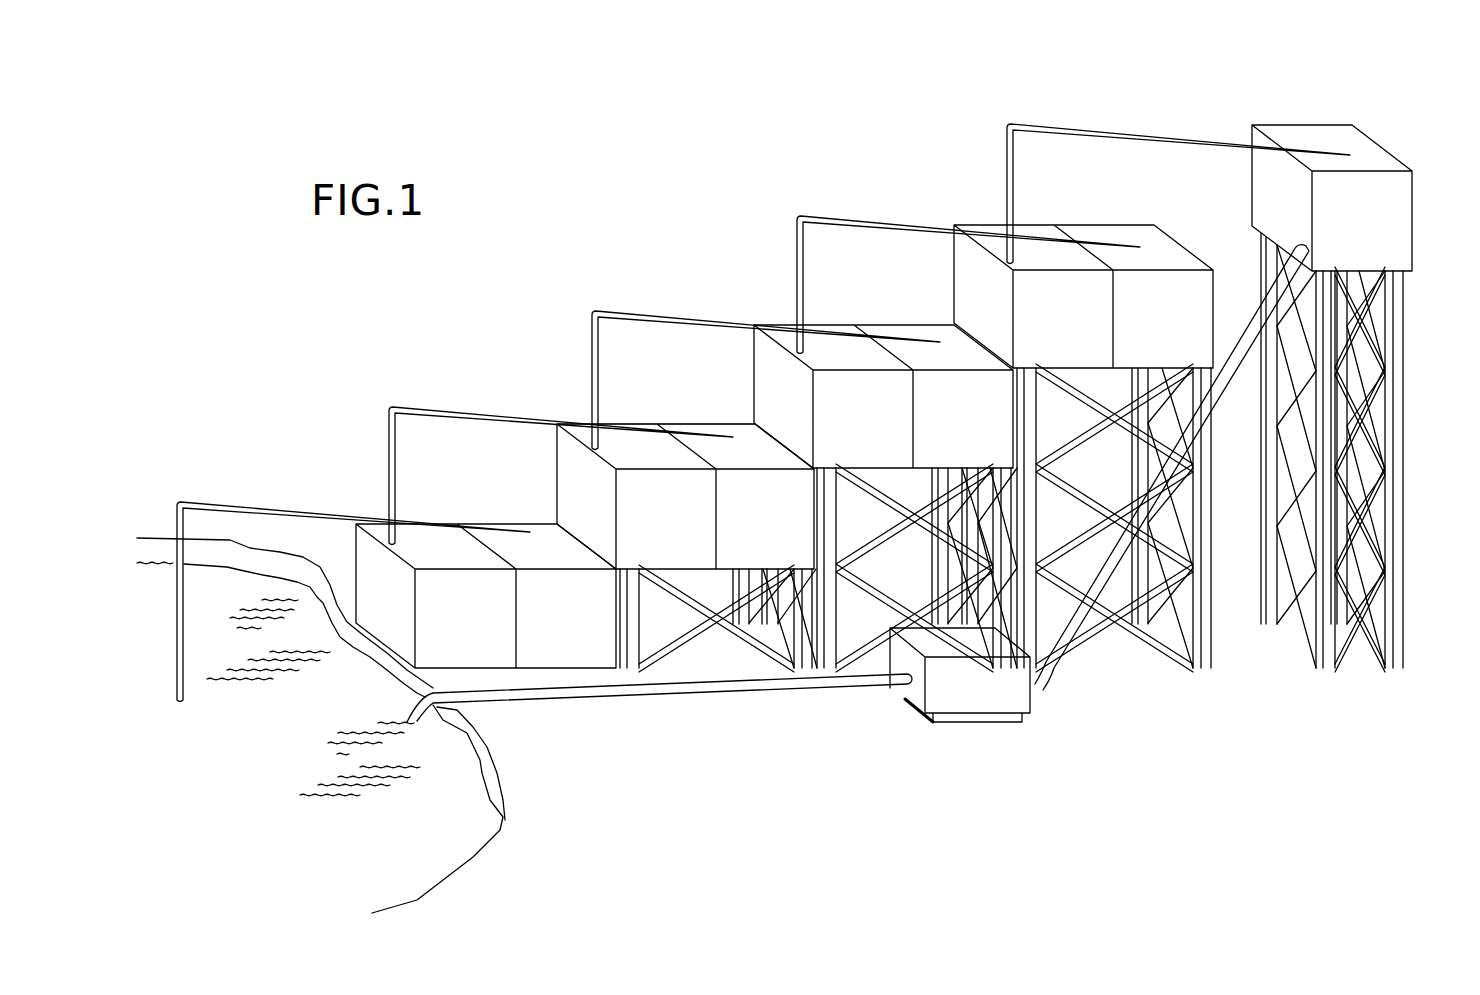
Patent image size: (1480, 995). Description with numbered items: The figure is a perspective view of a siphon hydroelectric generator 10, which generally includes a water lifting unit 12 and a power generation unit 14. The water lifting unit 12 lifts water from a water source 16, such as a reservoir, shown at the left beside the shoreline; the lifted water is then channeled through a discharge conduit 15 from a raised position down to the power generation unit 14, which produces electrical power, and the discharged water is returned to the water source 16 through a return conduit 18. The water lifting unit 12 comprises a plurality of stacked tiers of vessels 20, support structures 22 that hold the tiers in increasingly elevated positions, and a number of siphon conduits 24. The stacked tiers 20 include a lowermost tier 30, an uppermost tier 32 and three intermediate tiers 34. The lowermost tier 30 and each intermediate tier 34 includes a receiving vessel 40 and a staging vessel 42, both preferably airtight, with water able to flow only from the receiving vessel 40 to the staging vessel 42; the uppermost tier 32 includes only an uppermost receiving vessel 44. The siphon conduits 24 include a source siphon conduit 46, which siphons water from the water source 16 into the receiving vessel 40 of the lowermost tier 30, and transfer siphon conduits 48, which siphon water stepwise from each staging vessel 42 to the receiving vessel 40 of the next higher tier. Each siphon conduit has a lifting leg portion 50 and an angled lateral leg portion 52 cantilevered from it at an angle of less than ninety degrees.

The siphon hydroelectric generator 10 is at (1378, 93).
The water lifting unit 12 is at (701, 242).
The power generation unit 14 is at (1048, 715).
The discharge conduit 15 is at (1117, 567).
The water source 16 is at (463, 827).
The return conduit 18 is at (677, 688).
The stacked tiers of vessels 20 is at (743, 358).
The support structures 22 is at (1197, 598).
The siphon conduits 24 is at (387, 448).
The lowermost tier 30 is at (370, 565).
The uppermost tier 32 is at (1256, 180).
The intermediate tiers 34 is at (540, 457).
The receiving vessel 40 is at (758, 520).
The staging vessel 42 is at (570, 452).
The uppermost receiving vessel 44 is at (1390, 213).
The source siphon conduit 46 is at (177, 523).
The transfer siphon conduits 48 is at (798, 232).
The lifting leg portion 50 is at (797, 260).
The angled lateral leg portion 52 is at (843, 215).